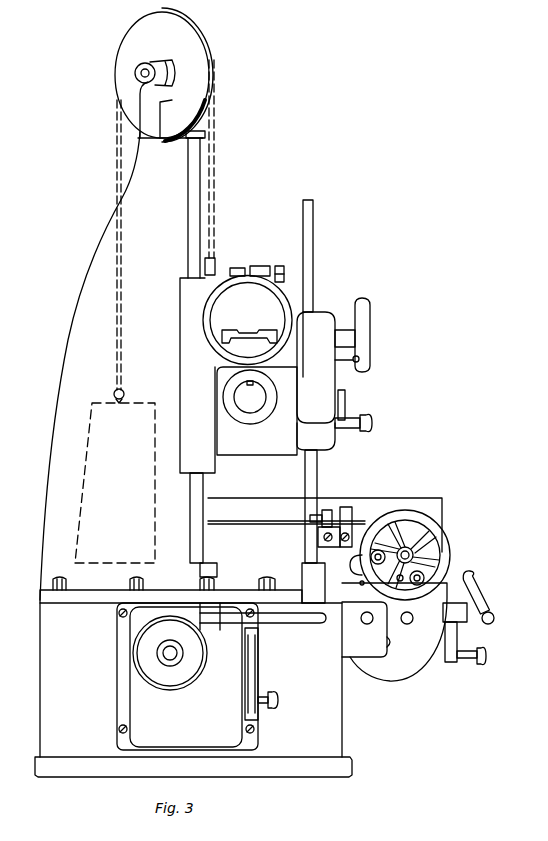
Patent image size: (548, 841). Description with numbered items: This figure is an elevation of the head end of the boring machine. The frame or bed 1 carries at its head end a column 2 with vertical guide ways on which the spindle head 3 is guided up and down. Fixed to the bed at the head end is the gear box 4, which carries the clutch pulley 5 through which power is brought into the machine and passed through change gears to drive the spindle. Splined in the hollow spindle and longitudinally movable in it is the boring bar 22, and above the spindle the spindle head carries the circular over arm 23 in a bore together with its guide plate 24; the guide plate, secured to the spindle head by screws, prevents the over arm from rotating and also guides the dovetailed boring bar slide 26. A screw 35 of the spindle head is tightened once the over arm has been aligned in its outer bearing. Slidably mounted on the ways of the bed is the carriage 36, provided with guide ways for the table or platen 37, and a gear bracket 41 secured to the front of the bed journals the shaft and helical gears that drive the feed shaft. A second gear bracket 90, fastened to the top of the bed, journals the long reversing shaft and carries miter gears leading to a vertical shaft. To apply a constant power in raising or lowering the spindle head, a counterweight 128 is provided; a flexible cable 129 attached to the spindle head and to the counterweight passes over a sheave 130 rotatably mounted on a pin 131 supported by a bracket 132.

The frame or bed 1 is at (344, 735).
The column 2 is at (70, 320).
The spindle head 3 is at (181, 386).
The gear box 4 is at (117, 697).
The clutch pulley 5 is at (134, 658).
The boring bar 22 is at (258, 405).
The over arm 23 is at (240, 294).
The guide plate 24 is at (229, 343).
The boring bar slide 26 is at (240, 416).
The screw 35 is at (279, 273).
The carriage 36 is at (415, 670).
The table or platen 37 is at (388, 503).
The gear bracket 41 is at (378, 660).
The gear bracket 90 is at (250, 573).
The counterweight 128 is at (101, 410).
The flexible cable 129 is at (215, 112).
The sheave 130 is at (211, 46).
The pin 131 is at (138, 70).
The bracket 132 is at (144, 107).